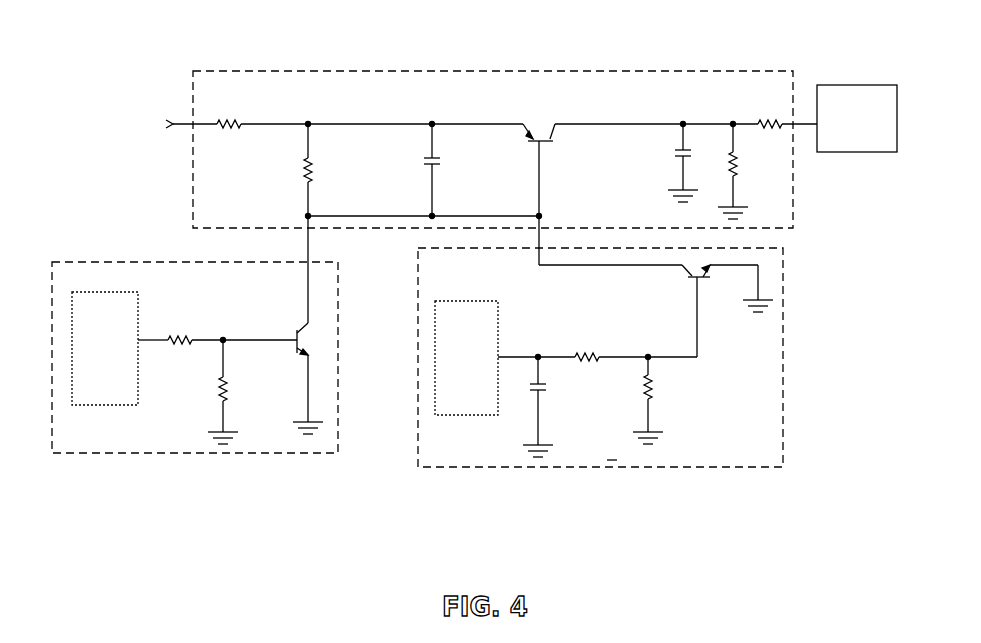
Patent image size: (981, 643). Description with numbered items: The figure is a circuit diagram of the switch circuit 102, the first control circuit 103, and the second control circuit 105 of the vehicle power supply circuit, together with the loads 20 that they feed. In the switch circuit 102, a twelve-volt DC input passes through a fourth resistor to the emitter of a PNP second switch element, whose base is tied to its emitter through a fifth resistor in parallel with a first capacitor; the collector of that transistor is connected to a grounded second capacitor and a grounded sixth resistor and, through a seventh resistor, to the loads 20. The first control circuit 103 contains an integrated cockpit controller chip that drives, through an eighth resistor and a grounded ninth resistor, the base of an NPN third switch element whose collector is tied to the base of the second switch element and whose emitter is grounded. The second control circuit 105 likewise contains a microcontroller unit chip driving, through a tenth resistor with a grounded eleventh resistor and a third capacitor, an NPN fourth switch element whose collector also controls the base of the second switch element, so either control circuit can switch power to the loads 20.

The switch circuit 102 is at (527, 71).
The first control circuit 103 is at (205, 455).
The second control circuit 105 is at (592, 470).
The loads 20 is at (850, 153).